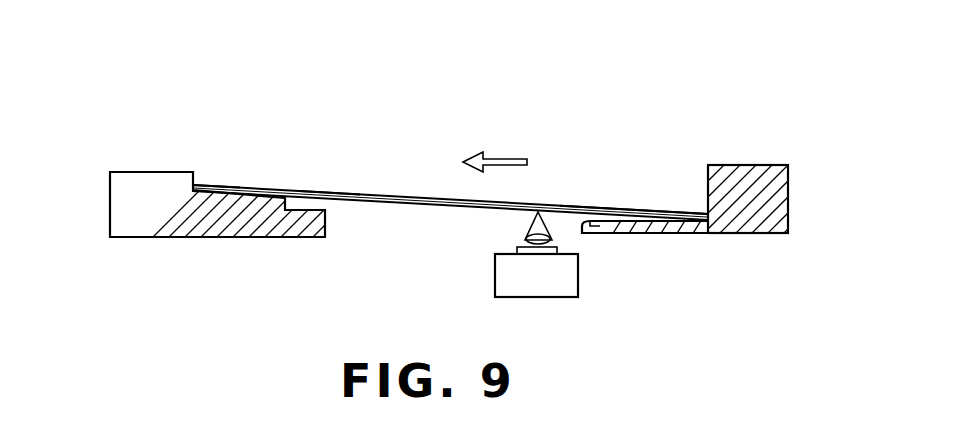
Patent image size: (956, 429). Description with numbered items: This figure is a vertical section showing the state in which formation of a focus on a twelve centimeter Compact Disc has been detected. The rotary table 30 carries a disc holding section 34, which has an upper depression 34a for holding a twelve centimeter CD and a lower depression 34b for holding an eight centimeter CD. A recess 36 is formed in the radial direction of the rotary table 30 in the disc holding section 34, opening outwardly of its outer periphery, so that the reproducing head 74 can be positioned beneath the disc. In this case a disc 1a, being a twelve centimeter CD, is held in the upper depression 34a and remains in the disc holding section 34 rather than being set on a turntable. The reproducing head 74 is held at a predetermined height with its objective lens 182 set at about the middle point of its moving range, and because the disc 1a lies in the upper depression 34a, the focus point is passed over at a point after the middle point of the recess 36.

The rotary table 30 is at (137, 171).
The disc holding section 34 is at (282, 138).
The depression for holding a 12 cm Compact Disc 34a is at (207, 169).
The depression for holding an 8 cm CD 34b is at (327, 192).
The disc 1a is at (611, 210).
The recess 36 is at (355, 238).
The objective lens 182 is at (525, 238).
The reproducing head 74 is at (578, 285).